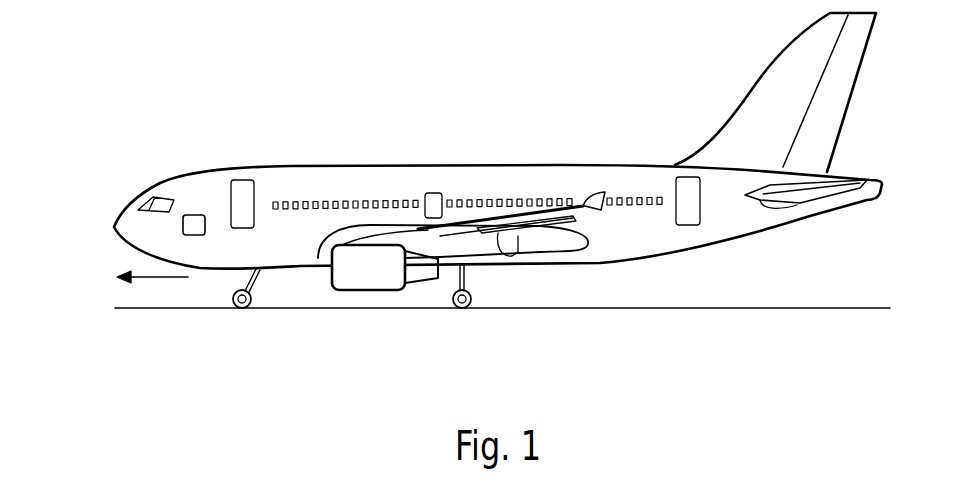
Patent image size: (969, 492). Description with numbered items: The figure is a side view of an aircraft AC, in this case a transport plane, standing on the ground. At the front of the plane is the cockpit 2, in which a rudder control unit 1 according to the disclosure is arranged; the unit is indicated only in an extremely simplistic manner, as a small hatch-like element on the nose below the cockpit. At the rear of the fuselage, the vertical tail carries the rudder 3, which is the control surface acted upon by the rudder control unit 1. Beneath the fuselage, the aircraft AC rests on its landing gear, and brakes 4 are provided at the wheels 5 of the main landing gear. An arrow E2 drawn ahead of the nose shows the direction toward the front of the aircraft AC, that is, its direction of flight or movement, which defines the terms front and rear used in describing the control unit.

The aircraft AC is at (663, 250).
The rudder control unit 1 is at (203, 196).
The cockpit 2 is at (177, 190).
The rudder 3 is at (830, 105).
The brakes 4 is at (452, 299).
The wheels 5 is at (472, 303).
The arrow E2 is at (167, 278).